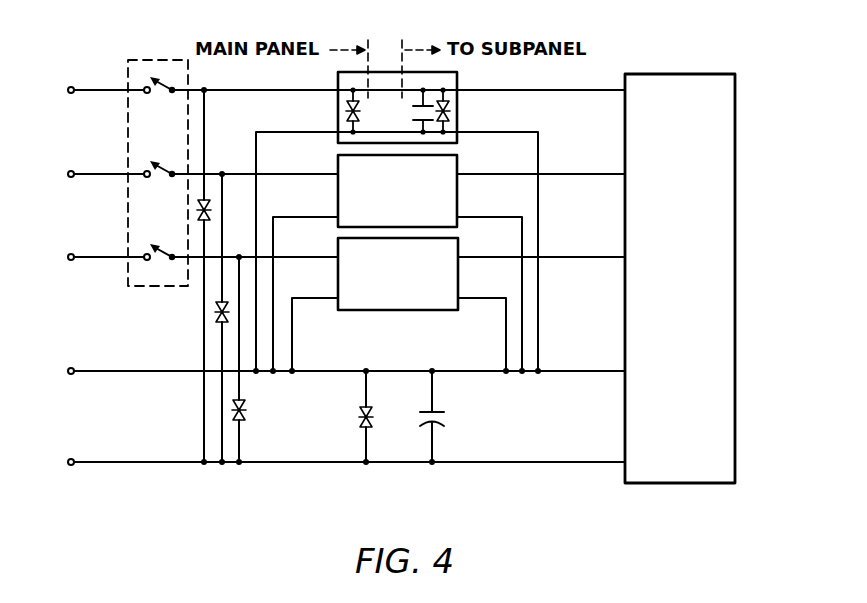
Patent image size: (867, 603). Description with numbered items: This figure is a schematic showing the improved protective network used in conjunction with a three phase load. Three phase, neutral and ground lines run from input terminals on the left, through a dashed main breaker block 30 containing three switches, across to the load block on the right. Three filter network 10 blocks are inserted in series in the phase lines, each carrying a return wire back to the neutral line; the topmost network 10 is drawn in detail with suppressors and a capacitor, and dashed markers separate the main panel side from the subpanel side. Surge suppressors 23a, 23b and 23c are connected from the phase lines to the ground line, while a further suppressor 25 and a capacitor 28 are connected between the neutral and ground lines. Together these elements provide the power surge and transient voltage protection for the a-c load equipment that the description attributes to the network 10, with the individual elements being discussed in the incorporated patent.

The main circuit breaker switch 30 is at (138, 72).
The varistor 23a is at (207, 211).
The varistor 23b is at (216, 313).
The varistor 23c is at (246, 411).
The network 10 is at (458, 98).
The varistor 25 is at (357, 421).
The capacitor 28 is at (446, 412).